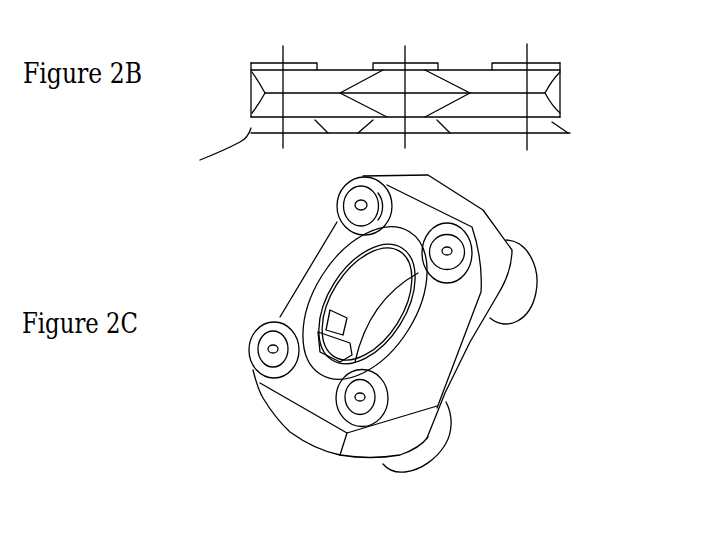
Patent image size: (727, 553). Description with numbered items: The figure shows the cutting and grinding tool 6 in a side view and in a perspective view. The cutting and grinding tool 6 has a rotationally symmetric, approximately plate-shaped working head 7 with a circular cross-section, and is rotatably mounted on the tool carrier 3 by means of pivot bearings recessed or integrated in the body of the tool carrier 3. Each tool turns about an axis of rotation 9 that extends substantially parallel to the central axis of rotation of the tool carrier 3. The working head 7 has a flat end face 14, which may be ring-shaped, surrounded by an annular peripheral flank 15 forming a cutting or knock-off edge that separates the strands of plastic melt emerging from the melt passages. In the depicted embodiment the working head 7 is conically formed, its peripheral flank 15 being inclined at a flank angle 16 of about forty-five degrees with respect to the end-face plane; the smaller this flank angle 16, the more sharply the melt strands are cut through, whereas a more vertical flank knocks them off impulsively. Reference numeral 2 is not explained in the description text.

In FIG. 2C, the holder assembly 2 is at (374, 349).
In FIG. 2C, the tool carrier 3 is at (452, 355).
In FIG. 2B, the cutting and grinding tool 6 is at (563, 143).
In FIG. 2C, the cutting and grinding tool 6 is at (425, 450).
In FIG. 2B, the working head 7 is at (582, 119).
In FIG. 2B, the axis of rotation 9 is at (528, 55).
In FIG. 2B, the flat end face 14 is at (507, 133).
In FIG. 2B, the annular peripheral flank 15 is at (487, 130).
In FIG. 2B, the flank angle 16 is at (210, 129).